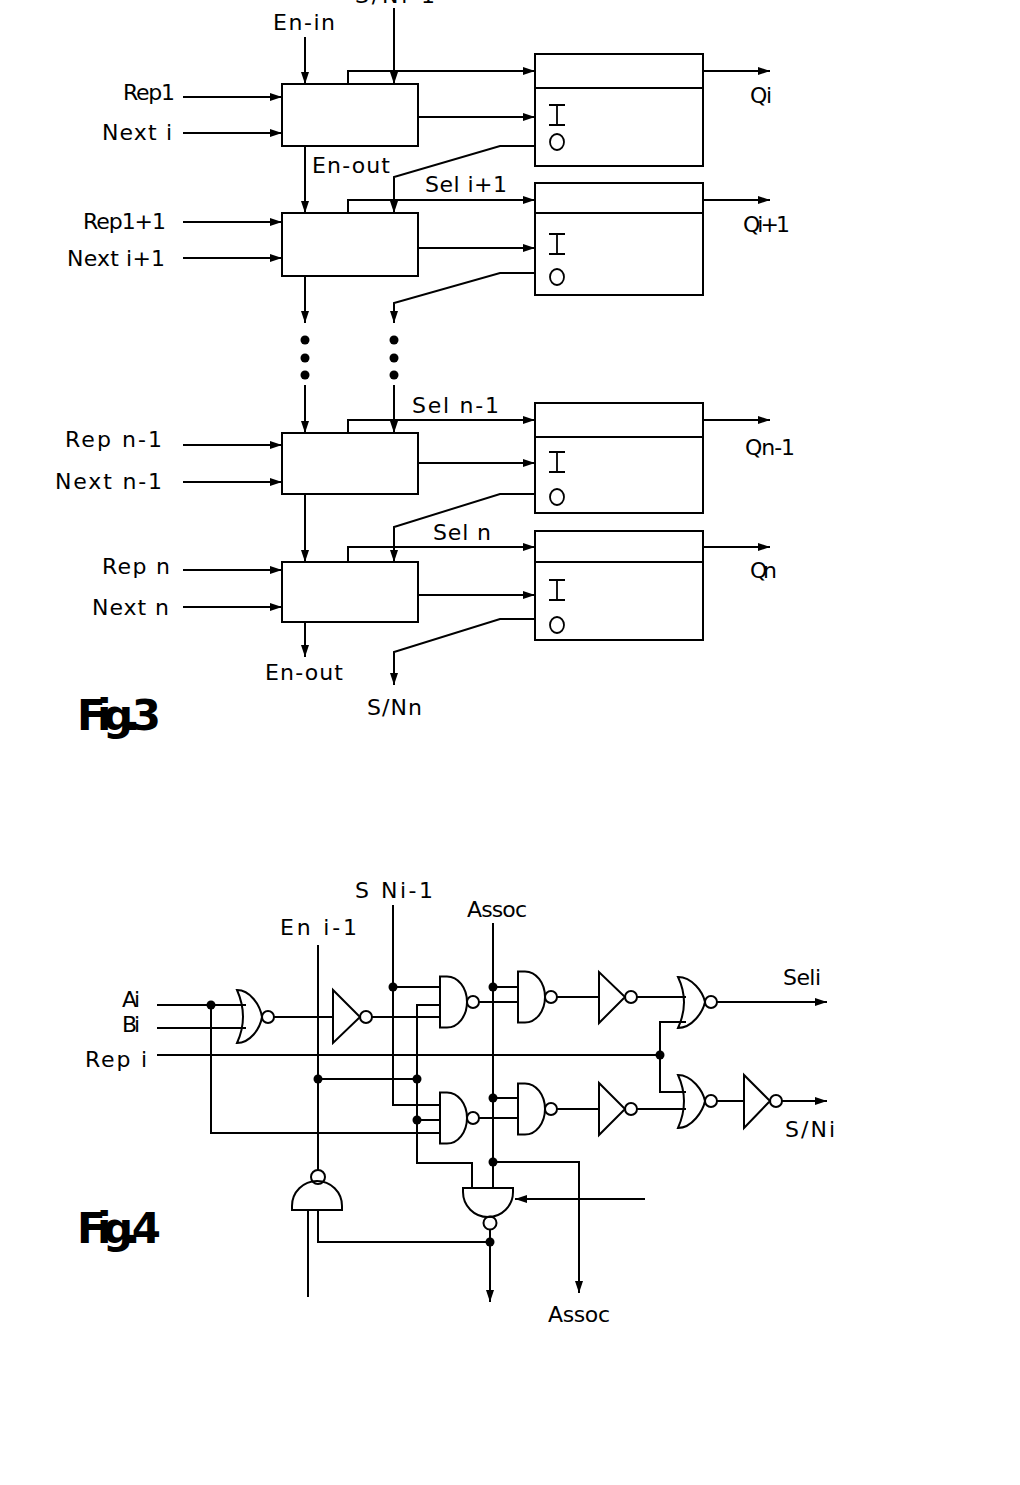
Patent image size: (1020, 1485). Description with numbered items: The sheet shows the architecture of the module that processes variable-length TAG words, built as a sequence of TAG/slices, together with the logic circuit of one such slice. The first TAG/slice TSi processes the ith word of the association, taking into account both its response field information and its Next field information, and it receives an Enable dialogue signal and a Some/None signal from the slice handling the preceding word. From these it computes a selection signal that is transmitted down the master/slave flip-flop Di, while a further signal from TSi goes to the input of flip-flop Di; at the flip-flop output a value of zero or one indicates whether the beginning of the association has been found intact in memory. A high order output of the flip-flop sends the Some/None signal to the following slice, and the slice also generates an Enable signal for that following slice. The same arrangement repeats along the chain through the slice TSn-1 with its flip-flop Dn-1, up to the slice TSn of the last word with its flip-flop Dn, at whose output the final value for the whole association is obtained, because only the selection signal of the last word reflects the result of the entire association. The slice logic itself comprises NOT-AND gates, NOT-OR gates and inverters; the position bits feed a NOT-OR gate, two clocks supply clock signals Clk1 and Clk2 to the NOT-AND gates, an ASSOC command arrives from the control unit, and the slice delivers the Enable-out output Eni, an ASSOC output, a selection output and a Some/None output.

In FIG. 3, the TAG/slice TSi is at (350, 115).
In FIG. 3, the TAG/slice TSn-1 is at (350, 463).
In FIG. 3, the TAG/slice TSn is at (350, 592).
In FIG. 3, the master/slave flip-flop Di is at (619, 110).
In FIG. 3, the master/slave flip-flop Dn-1 is at (619, 458).
In FIG. 3, the master/slave flip-flop Dn is at (619, 585).
In FIG. 4, the clock signal Clk1 is at (603, 1197).
In FIG. 4, the clock signal Clk2 is at (298, 1271).
In FIG. 4, the Enable-out output Eni is at (484, 1284).